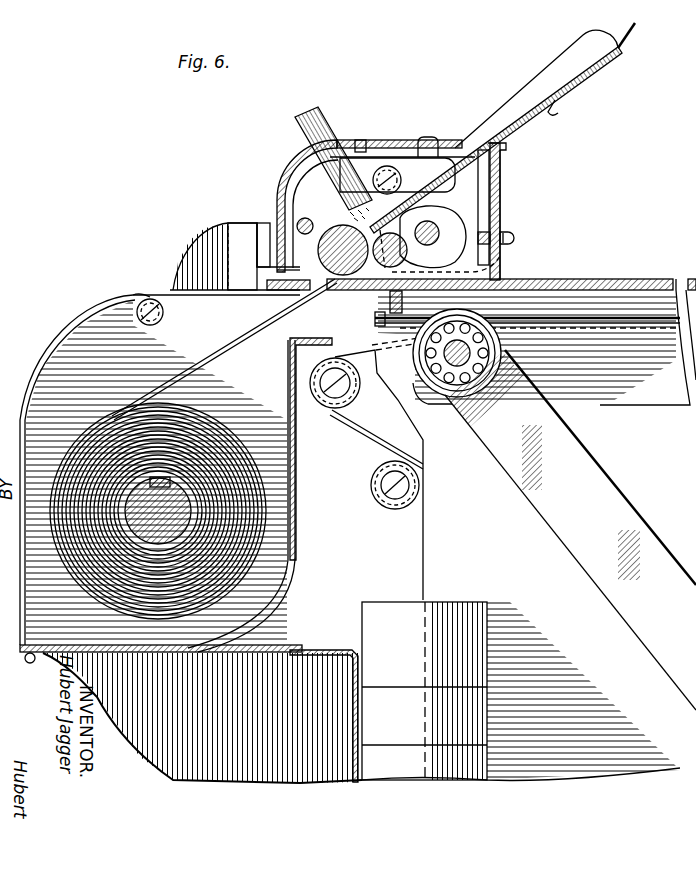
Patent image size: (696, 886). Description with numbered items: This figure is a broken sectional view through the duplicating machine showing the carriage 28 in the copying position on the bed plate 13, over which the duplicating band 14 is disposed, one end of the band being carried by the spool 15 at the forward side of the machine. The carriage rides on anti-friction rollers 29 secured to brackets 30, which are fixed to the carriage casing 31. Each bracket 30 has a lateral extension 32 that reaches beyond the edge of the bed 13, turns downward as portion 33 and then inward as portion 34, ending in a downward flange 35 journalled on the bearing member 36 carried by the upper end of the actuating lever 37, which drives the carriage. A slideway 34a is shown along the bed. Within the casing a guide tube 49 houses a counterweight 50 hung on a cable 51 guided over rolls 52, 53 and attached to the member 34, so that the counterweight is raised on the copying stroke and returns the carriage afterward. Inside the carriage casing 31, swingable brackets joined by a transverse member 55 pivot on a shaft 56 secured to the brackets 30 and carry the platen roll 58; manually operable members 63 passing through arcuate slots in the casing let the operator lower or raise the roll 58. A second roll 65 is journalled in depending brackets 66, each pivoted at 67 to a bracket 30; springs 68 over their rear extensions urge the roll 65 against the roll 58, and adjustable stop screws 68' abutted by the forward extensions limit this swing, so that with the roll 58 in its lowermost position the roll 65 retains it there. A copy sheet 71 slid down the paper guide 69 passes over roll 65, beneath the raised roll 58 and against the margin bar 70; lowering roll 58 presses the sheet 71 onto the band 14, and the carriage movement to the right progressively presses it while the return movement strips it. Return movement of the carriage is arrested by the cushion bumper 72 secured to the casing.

The bed plate 13 is at (625, 279).
The duplicating band 14 is at (590, 279).
The spool 15 is at (175, 480).
The carriage 28 is at (290, 152).
The anti-friction roller 29 is at (507, 262).
The bracket 30 is at (501, 160).
The carriage casing 31 is at (345, 140).
The lateral extension 32 is at (430, 292).
The downward portion 33 is at (500, 336).
The inward portion 34 is at (380, 341).
The slideway 34a is at (609, 305).
The downward flange 35 is at (414, 400).
The bearing member 36 is at (500, 352).
The actuating lever 37 is at (577, 453).
The guide tube 49 is at (490, 636).
The counterweight 50 is at (360, 208).
The cable 51 is at (428, 558).
The roll 52 is at (420, 485).
The roll 53 is at (346, 400).
The transverse member 55 is at (480, 207).
The shaft 56 is at (470, 185).
The platen roll 58 is at (338, 228).
The manually operable member 63 is at (314, 110).
The second roll 65 is at (320, 286).
The depending bracket 66 is at (372, 158).
The pivot 67 is at (390, 168).
The spring 68 is at (434, 130).
The adjustable stop screw 68' is at (374, 119).
The paper guide 69 is at (548, 108).
The margin bar 70 is at (224, 349).
The copy sheet 71 is at (640, 37).
The cushion bumper 72 is at (260, 222).